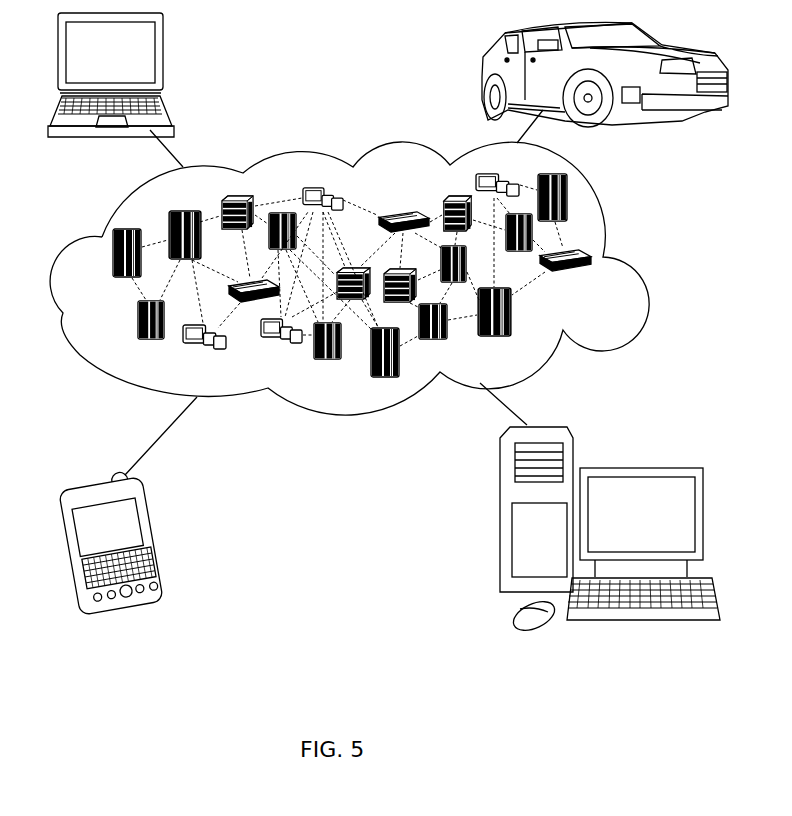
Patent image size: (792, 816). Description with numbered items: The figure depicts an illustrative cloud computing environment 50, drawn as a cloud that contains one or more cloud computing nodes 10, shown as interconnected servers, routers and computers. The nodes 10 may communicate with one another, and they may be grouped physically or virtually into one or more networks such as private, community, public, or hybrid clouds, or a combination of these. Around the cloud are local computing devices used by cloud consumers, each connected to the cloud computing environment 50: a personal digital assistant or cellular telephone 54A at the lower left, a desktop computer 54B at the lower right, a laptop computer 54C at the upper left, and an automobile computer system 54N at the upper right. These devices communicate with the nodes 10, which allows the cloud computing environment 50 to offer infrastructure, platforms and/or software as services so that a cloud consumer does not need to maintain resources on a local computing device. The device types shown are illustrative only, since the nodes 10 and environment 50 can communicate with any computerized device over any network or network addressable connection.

The cloud computing nodes 10 is at (603, 284).
The cloud computing environment 50 is at (642, 258).
The personal digital assistant (PDA) or cellular telephone 54A is at (150, 538).
The desktop computer 54B is at (640, 467).
The laptop computer 54C is at (164, 62).
The automobile computer system 54N is at (482, 72).